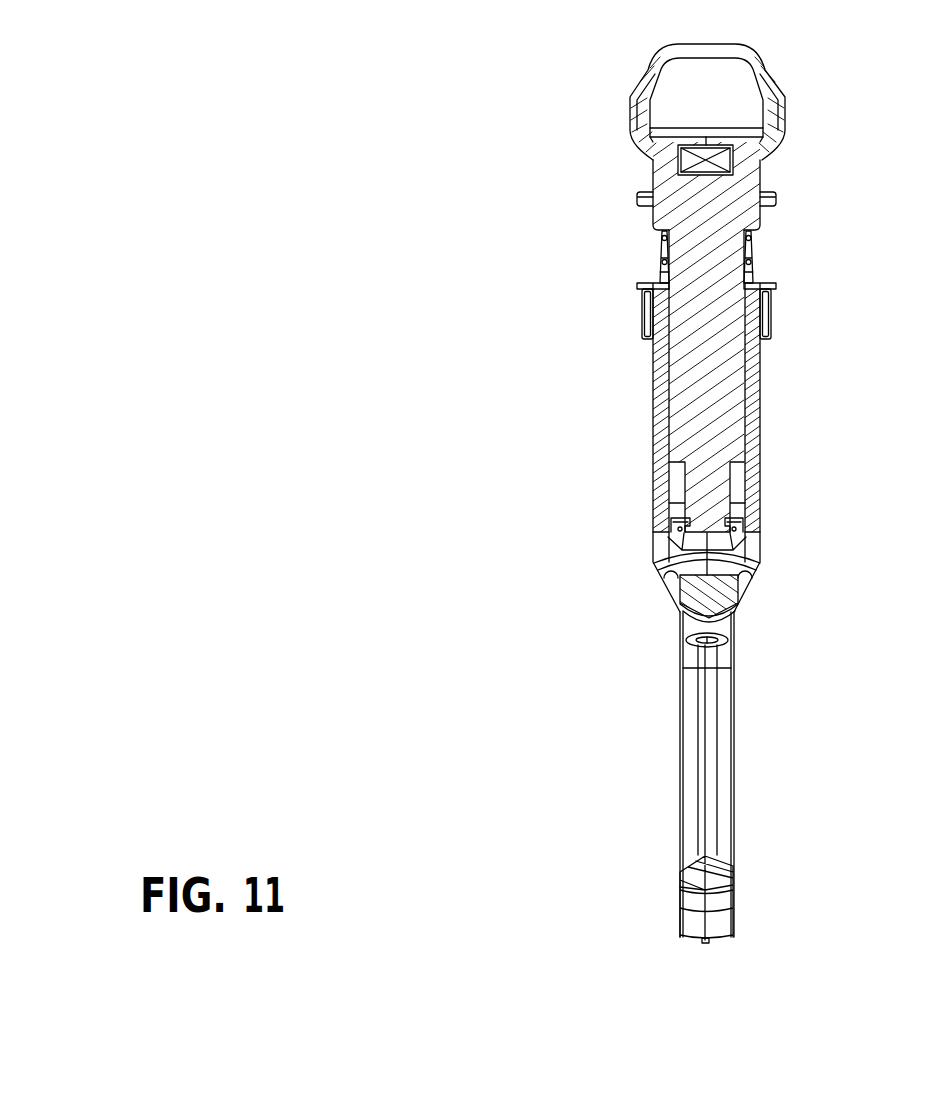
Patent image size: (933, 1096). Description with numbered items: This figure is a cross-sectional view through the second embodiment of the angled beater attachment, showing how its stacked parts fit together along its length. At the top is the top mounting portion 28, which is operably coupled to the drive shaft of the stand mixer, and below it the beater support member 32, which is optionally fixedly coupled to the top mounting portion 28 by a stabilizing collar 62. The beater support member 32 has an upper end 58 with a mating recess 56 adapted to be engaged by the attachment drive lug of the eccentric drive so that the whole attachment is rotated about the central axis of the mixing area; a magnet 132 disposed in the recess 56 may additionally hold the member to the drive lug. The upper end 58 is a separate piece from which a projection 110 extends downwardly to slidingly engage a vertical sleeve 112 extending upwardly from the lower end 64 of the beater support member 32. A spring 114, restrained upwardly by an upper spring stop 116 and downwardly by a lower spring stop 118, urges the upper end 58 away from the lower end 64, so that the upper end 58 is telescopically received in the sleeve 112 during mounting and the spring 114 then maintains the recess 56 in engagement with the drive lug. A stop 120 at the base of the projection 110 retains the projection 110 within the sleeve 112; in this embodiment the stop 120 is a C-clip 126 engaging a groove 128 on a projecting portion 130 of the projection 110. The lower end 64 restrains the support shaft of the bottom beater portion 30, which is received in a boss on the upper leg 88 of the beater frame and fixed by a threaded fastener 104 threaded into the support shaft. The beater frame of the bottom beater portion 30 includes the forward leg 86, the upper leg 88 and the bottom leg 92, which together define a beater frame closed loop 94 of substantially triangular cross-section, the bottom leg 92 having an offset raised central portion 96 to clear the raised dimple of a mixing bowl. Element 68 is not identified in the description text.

The mating recess 56 is at (668, 88).
The upper end 58 is at (775, 118).
The magnet 132 is at (718, 157).
The beater support member 32 is at (760, 165).
The top mounting portion 28 is at (772, 200).
The upper spring stop 116 is at (753, 232).
The spring 114 is at (752, 272).
The lower spring stop 118 is at (663, 285).
The collar 62 is at (770, 313).
The projection 110 is at (700, 318).
The vertical sleeve 112 is at (753, 383).
The lower end 64 is at (762, 473).
The groove 128 is at (680, 520).
The C-clip 126 is at (731, 525).
The stop 120 is at (693, 533).
The projecting portion 130 is at (702, 538).
The upper leg 88 is at (715, 592).
The threaded fastener 104 is at (697, 628).
The bottom beater portion 30 is at (706, 660).
The forward leg 86 is at (705, 757).
The beater frame closed loop 94 is at (722, 830).
The bottom leg 92 is at (705, 866).
The offset raised central portion 96 is at (718, 895).
The distal nub 68 is at (700, 937).